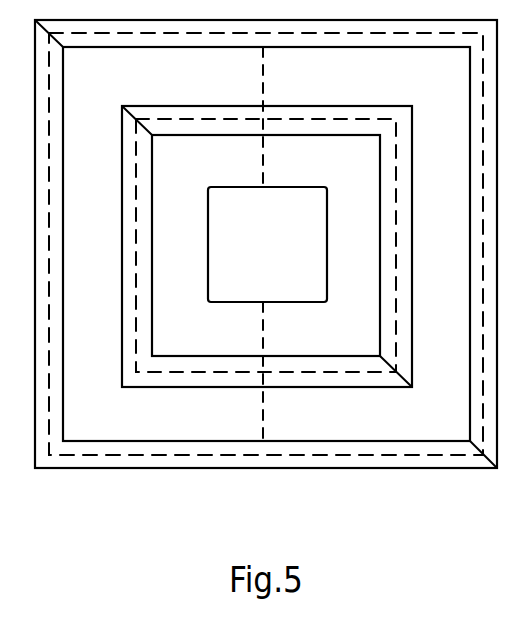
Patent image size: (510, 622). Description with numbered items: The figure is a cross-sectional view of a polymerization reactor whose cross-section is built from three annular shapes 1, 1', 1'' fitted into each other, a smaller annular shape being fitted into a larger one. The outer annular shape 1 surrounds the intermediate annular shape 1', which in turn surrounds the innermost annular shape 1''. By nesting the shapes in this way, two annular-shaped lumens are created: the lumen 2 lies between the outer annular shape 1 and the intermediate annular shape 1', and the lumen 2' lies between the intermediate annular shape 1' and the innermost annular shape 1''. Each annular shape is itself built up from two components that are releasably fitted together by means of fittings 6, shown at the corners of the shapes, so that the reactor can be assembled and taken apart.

The annular shape 1 is at (266, 280).
The annular shape 1' is at (267, 323).
The annular shape 1'' is at (284, 364).
The lumen 2 is at (266, 294).
The lumen 2' is at (266, 338).
The fitting 6 is at (489, 463).